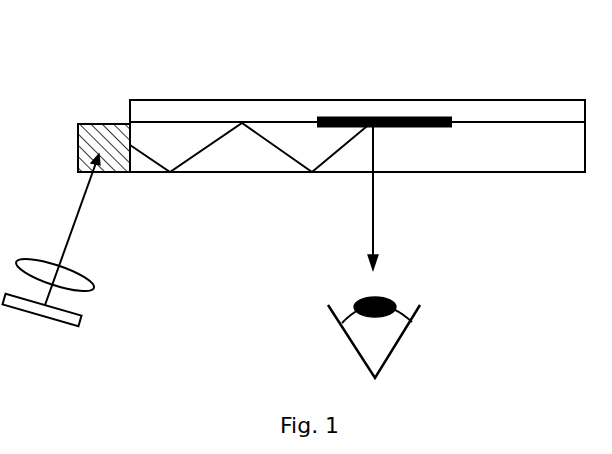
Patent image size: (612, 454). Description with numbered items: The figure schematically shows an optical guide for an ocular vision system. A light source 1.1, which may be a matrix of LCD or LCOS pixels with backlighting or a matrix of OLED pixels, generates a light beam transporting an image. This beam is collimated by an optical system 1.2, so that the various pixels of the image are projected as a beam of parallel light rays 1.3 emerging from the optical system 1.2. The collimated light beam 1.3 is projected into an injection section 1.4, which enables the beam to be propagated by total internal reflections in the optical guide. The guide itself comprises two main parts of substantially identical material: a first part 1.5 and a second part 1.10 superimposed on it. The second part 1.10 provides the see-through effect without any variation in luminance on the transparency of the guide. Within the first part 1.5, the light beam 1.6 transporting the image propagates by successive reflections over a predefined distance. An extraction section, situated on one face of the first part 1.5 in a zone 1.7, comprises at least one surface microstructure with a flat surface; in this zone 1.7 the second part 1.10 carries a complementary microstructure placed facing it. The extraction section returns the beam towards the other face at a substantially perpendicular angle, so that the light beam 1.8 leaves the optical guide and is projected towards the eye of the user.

The light source 1.1 is at (84, 318).
The optical system 1.2 is at (75, 272).
The collimated light beam 1.3 is at (73, 219).
The injection section 1.4 is at (97, 124).
The first part 1.5 is at (545, 172).
The light beam 1.6 is at (285, 155).
The zone 1.7 is at (364, 116).
The light beam 1.8 is at (375, 212).
The second part 1.10 is at (536, 100).